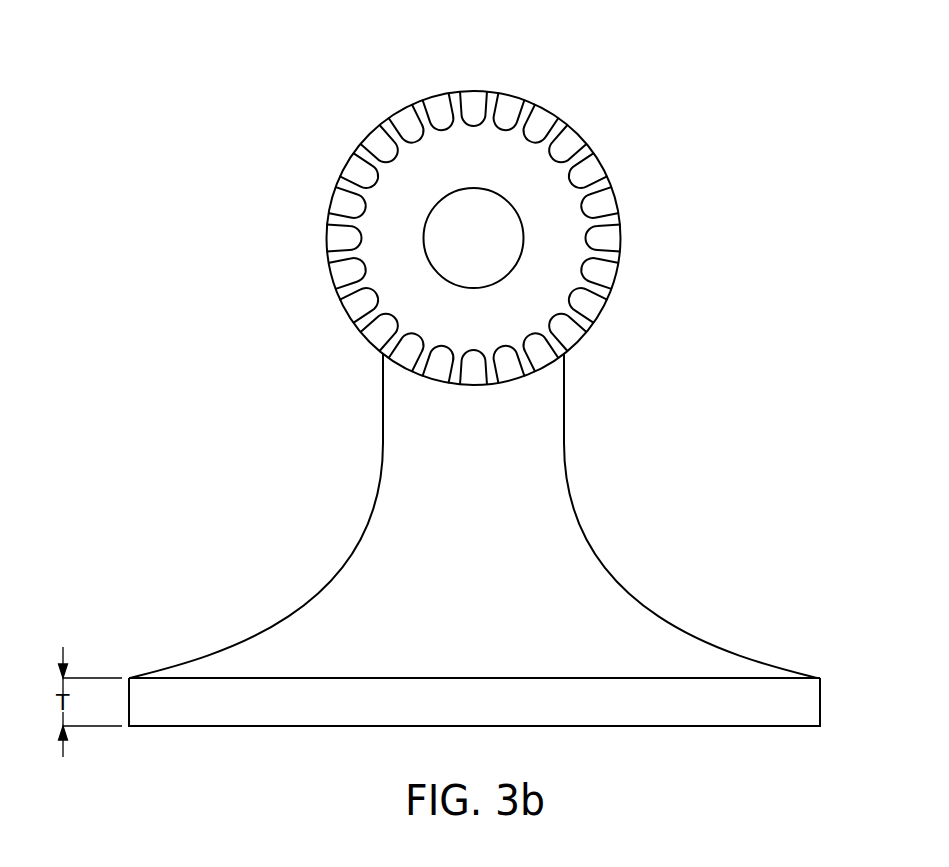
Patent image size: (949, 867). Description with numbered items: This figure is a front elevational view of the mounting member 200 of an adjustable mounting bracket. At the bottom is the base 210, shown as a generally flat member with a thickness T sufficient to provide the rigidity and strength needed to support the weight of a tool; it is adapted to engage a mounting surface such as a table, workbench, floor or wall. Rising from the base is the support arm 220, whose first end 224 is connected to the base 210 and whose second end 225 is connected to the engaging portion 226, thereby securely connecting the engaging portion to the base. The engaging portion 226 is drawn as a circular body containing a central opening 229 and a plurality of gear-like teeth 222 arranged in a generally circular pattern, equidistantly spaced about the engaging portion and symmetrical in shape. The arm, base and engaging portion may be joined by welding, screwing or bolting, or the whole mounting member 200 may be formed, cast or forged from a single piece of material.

The mounting member 200 is at (539, 374).
The gear-like teeth 222 is at (497, 238).
The engaging portion 226 is at (450, 238).
The opening 229 is at (497, 251).
The second end 225 is at (536, 398).
The support arm 220 is at (473, 516).
The first end 224 is at (474, 621).
The base 210 is at (539, 649).